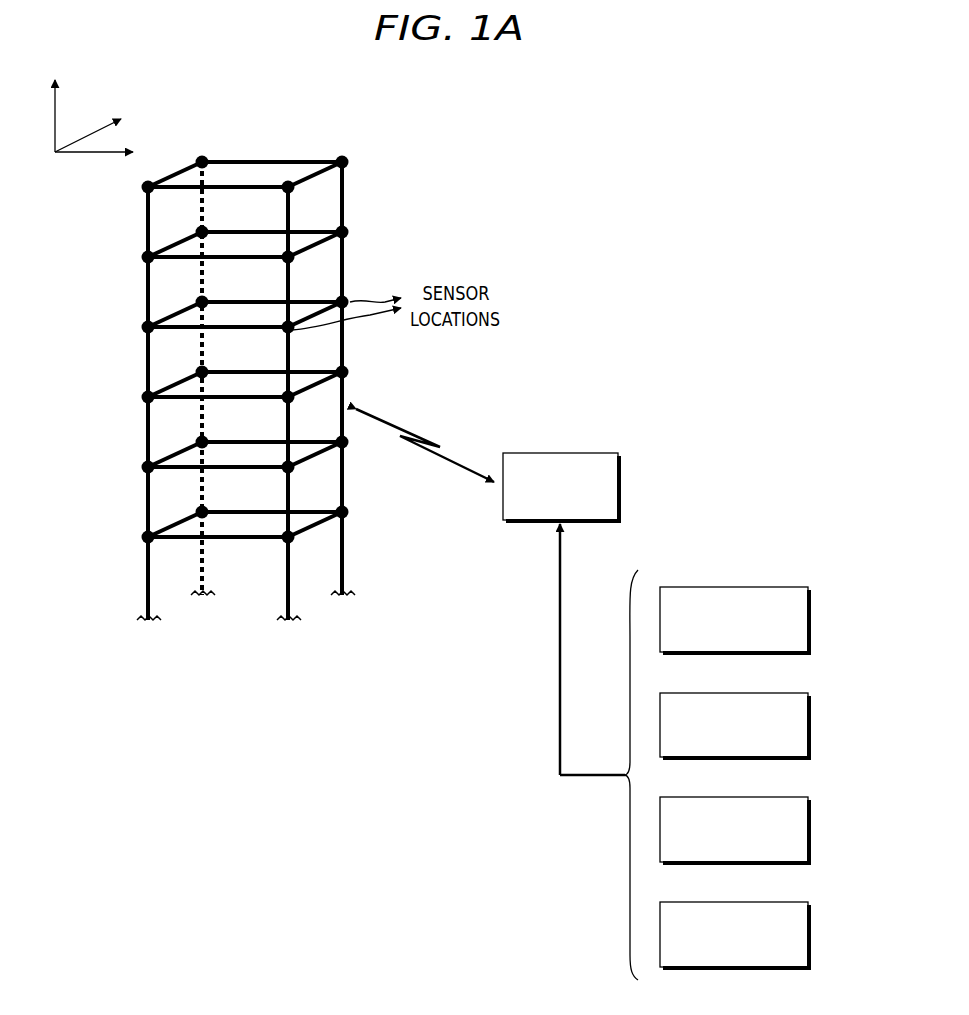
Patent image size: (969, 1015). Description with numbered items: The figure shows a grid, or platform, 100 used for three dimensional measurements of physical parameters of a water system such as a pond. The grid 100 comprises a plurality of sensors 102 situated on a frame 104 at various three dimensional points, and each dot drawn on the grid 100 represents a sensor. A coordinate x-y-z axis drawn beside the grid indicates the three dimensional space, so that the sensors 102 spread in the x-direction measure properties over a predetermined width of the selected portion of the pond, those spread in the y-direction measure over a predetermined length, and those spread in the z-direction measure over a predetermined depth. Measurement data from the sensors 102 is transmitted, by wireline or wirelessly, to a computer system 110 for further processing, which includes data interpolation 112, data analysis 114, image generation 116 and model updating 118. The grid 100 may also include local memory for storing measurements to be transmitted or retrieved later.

The grid 100 is at (463, 75).
The sensors 102 is at (306, 190).
The frame 104 is at (345, 210).
The computer system 110 is at (563, 454).
The data interpolation 112 is at (755, 588).
The data analysis 114 is at (755, 694).
The image generation 116 is at (755, 798).
The model updating 118 is at (755, 903).